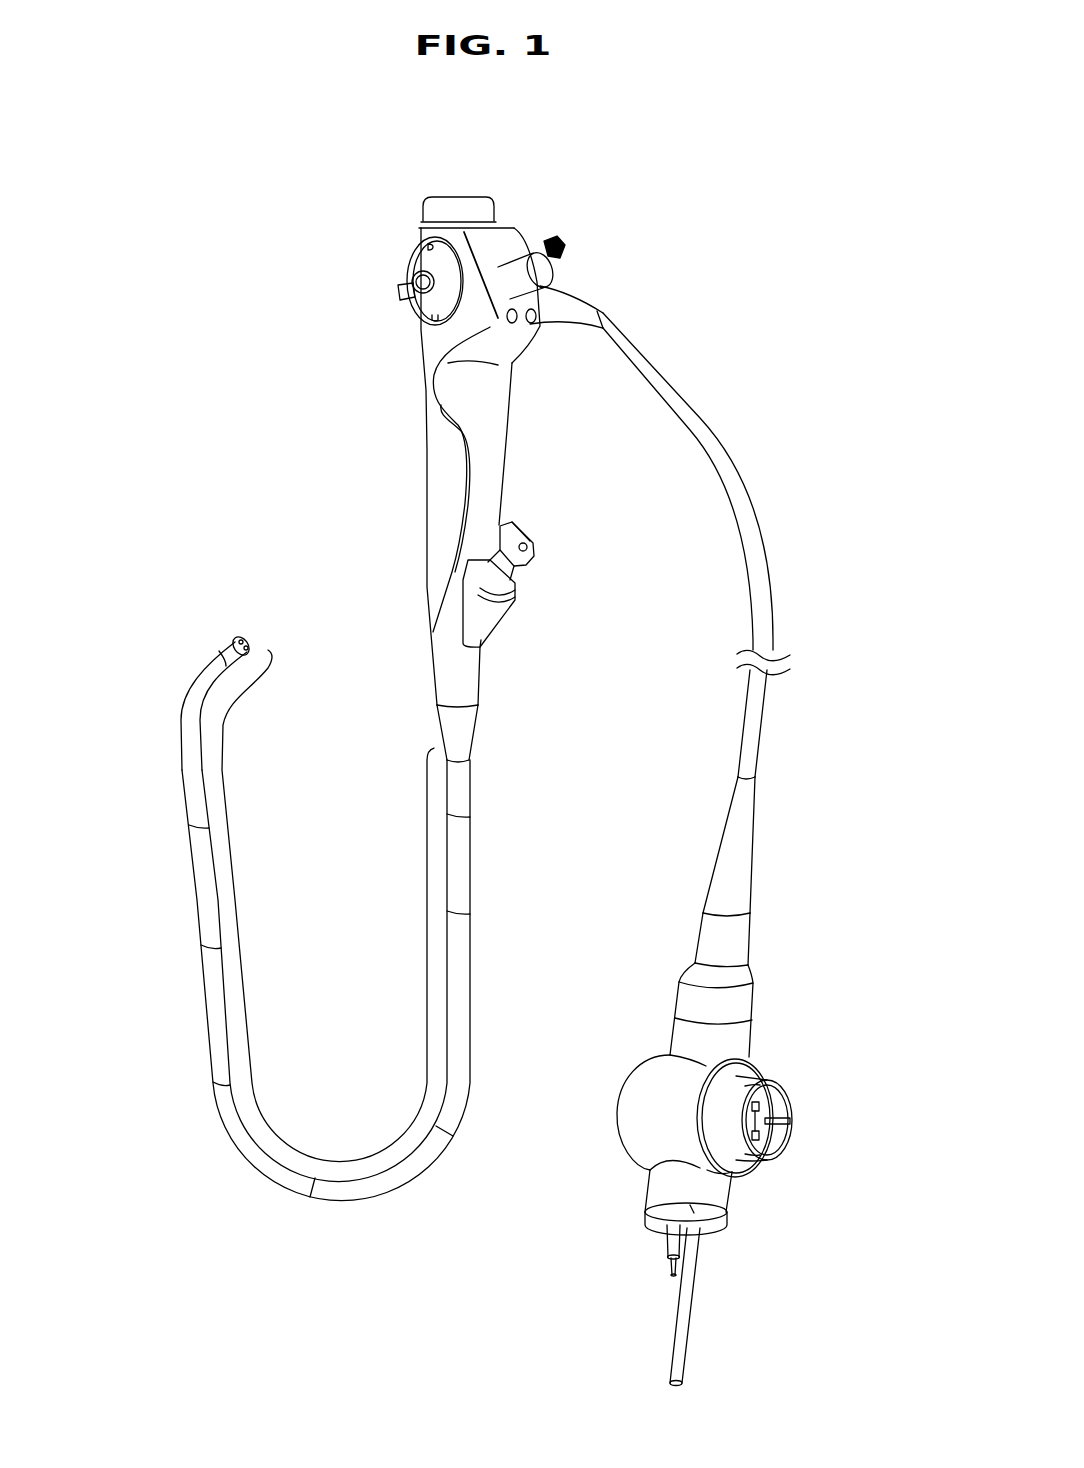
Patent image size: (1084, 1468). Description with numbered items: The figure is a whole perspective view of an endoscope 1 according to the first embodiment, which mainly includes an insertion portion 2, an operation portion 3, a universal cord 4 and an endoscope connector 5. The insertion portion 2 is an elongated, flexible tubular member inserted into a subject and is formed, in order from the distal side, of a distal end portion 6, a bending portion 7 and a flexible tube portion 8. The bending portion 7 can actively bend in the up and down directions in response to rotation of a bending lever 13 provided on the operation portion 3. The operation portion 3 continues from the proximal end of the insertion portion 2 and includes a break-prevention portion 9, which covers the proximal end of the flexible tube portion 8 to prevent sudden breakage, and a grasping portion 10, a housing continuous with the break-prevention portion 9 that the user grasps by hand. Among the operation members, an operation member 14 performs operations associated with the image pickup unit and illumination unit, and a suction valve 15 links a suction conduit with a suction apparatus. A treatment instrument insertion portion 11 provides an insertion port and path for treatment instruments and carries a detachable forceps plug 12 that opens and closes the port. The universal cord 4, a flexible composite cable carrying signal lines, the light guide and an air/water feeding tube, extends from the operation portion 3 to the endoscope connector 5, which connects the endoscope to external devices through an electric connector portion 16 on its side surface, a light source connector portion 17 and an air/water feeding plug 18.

The endoscope 1 is at (234, 202).
The insertion portion 2 is at (340, 1134).
The operation portion 3 is at (372, 485).
The universal cord 4 is at (729, 447).
The endoscope connector 5 is at (618, 1107).
The distal end portion 6 is at (236, 639).
The bending portion 7 is at (182, 720).
The flexible tube portion 8 is at (409, 1183).
The break-prevention portion 9 is at (475, 722).
The grasping portion 10 is at (506, 456).
The treatment instrument insertion portion 11 is at (498, 620).
The forceps plug 12 is at (523, 566).
The bending lever 13 is at (406, 291).
The operation member 14 is at (512, 324).
The suction valve 15 is at (549, 239).
The electric connector portion 16 is at (795, 1132).
The light source connector portion 17 is at (711, 1262).
The air/water feeding plug 18 is at (665, 1252).